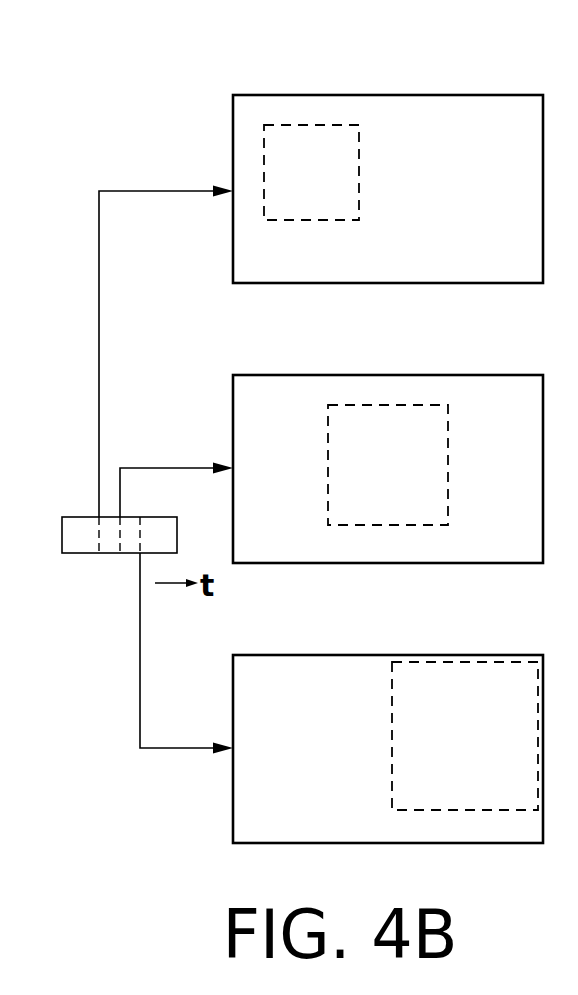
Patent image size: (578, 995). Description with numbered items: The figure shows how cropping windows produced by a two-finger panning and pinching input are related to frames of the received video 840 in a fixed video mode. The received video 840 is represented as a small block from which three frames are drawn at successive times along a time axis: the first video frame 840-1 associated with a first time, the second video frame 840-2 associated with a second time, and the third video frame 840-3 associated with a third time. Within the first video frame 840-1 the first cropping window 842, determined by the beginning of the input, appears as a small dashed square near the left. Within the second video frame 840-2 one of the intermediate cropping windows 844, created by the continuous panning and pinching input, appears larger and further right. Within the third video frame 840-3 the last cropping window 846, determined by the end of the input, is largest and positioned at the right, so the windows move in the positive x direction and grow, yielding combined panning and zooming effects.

The received video 840 is at (68, 553).
The first video frame 840-1 is at (393, 95).
The second video frame 840-2 is at (393, 375).
The third video frame 840-3 is at (393, 655).
The first cropping window 842 is at (359, 155).
The intermediate cropping windows 844 is at (448, 463).
The last cropping window 846 is at (392, 722).